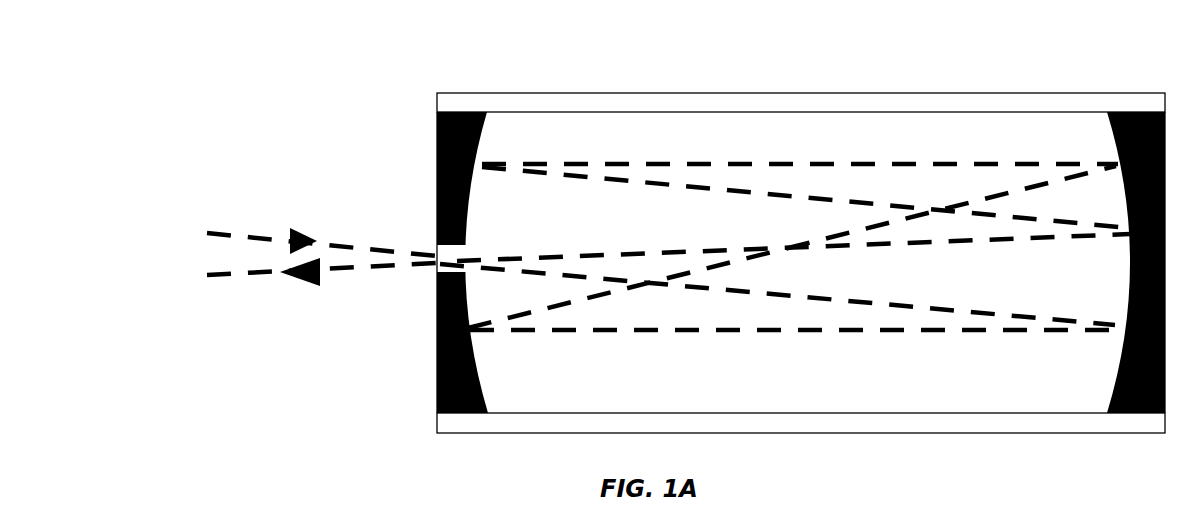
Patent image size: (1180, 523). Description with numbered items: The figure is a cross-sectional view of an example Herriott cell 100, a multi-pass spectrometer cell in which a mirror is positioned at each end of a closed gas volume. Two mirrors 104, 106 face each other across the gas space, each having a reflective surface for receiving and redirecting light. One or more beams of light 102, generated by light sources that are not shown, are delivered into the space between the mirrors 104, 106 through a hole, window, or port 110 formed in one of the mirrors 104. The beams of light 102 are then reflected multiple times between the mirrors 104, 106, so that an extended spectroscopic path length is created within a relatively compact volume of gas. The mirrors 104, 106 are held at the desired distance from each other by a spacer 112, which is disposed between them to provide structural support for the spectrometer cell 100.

The Herriott cell 100 is at (133, 135).
The beams of light 102 is at (218, 239).
The mirror 104 is at (435, 201).
The mirror 106 is at (1130, 297).
The port 110 is at (442, 270).
The spacer 112 is at (435, 107).